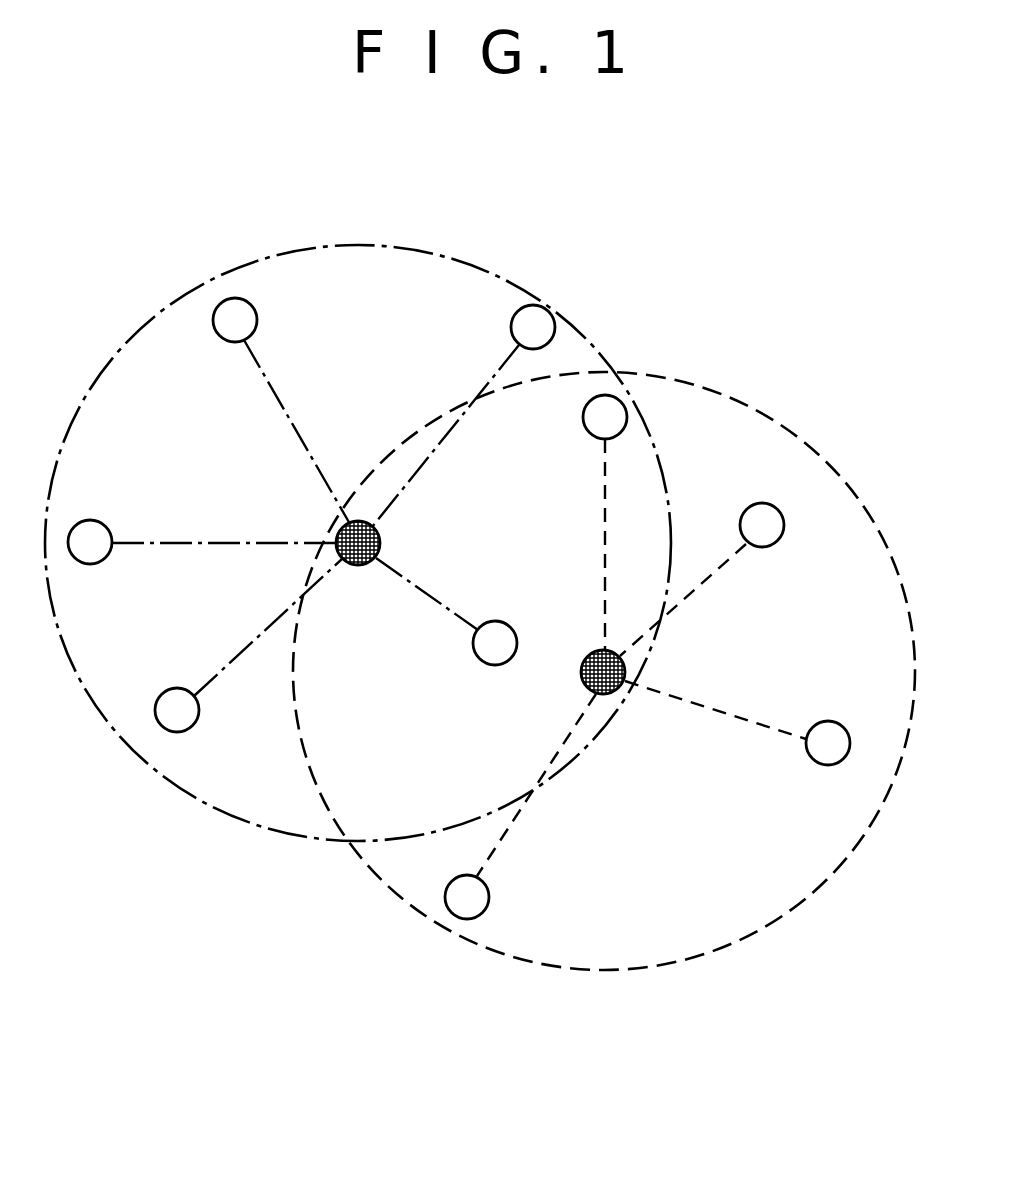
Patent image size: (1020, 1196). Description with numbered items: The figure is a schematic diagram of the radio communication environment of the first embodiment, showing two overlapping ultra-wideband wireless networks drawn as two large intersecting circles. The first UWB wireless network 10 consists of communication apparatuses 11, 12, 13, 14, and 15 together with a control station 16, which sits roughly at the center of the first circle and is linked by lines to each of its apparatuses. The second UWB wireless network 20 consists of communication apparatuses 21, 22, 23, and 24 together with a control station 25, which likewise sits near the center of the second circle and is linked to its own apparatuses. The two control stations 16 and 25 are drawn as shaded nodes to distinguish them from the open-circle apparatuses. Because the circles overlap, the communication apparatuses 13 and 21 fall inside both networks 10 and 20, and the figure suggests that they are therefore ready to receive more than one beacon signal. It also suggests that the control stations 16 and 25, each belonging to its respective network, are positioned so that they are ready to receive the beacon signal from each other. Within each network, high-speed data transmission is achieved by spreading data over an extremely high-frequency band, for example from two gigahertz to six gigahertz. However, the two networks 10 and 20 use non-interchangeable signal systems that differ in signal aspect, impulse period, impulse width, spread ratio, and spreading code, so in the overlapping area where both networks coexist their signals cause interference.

The first UWB wireless network 10 is at (158, 790).
The communication apparatus 11 is at (262, 309).
The communication apparatus 12 is at (506, 323).
The communication apparatus 13 is at (500, 622).
The communication apparatus 14 is at (182, 687).
The communication apparatus 15 is at (114, 528).
The control station 16 is at (328, 528).
The second UWB wireless network 20 is at (826, 903).
The communication apparatus 21 is at (584, 413).
The communication apparatus 22 is at (766, 503).
The communication apparatus 23 is at (843, 726).
The communication apparatus 24 is at (464, 879).
The control station 25 is at (586, 658).